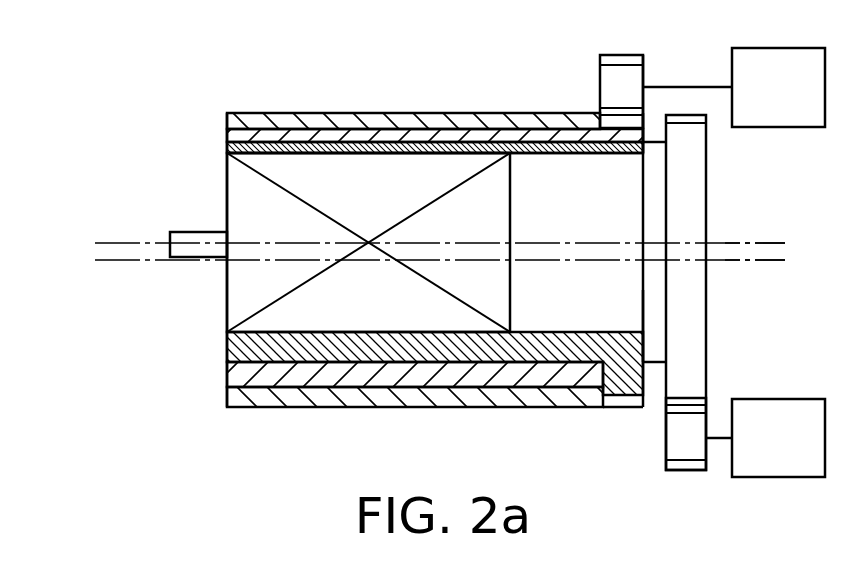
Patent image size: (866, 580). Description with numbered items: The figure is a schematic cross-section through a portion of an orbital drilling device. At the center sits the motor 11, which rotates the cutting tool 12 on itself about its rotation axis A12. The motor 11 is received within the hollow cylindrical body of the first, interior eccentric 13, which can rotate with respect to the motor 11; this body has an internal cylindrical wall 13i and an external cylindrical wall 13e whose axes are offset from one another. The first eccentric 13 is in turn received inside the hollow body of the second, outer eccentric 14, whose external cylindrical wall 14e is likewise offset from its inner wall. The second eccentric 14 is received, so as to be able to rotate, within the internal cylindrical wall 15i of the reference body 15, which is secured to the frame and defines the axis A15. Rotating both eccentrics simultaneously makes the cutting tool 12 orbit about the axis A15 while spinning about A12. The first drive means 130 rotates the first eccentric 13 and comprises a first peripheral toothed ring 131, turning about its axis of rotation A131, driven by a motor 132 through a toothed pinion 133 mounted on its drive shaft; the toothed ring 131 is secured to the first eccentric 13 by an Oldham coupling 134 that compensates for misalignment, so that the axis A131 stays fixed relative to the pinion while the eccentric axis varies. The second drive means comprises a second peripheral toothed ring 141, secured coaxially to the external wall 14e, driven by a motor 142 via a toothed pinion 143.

The motor 11 is at (240, 296).
The cutting tool 12 is at (168, 228).
The first eccentric 13 is at (548, 345).
The internal cylindrical wall 13i is at (581, 160).
The external cylindrical wall 13e is at (225, 146).
The second eccentric 14 is at (578, 380).
The external cylindrical wall 14e is at (225, 131).
The reference body 15 is at (528, 413).
The internal cylindrical wall 15i is at (225, 118).
The first drive means 130 is at (702, 331).
The first peripheral toothed ring 131 is at (693, 365).
The motor 132 is at (778, 463).
The toothed pinion 133 is at (680, 444).
The Oldham coupling 134 is at (652, 310).
The second peripheral toothed ring 141 is at (650, 133).
The motor 142 is at (782, 108).
The toothed pinion 143 is at (598, 92).
The rotation axis A12 is at (108, 240).
The axis of the reference body A15 is at (115, 264).
The axis of rotation of the toothed ring A131 is at (737, 251).